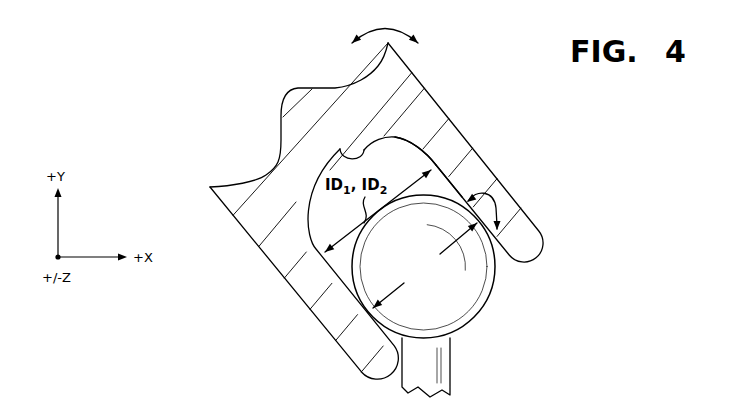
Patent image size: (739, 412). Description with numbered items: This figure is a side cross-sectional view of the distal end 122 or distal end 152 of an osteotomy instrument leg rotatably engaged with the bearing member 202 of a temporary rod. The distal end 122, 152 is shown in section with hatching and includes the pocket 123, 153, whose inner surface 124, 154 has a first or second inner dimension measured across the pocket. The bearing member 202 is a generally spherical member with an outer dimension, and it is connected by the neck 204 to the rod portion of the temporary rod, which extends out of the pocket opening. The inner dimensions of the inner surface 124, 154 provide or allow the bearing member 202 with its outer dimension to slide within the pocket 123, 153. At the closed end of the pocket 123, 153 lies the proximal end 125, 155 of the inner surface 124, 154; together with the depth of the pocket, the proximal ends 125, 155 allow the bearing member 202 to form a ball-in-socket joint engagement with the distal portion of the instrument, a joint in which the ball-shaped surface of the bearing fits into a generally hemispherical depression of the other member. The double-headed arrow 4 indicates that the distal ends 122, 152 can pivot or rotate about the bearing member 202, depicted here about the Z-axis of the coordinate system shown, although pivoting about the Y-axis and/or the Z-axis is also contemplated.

The double-headed arrow 4 is at (496, 206).
The distal end 122 is at (522, 162).
The distal end 152 is at (520, 262).
The first pocket 123 is at (479, 149).
The second pocket 153 is at (436, 167).
The inner surface 124 is at (290, 264).
The inner surface 154 is at (314, 232).
The proximal end 125 is at (422, 97).
The proximal end 155 is at (364, 151).
The bearing member 202 is at (493, 290).
The neck 204 is at (450, 365).